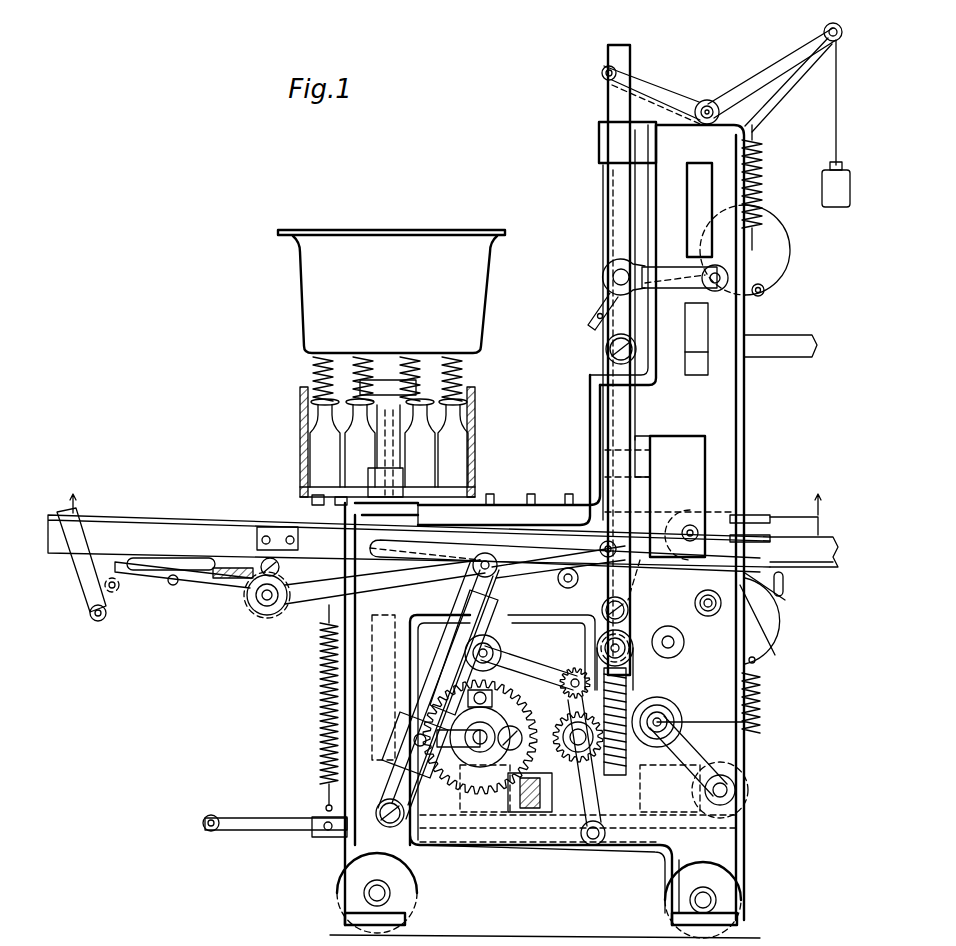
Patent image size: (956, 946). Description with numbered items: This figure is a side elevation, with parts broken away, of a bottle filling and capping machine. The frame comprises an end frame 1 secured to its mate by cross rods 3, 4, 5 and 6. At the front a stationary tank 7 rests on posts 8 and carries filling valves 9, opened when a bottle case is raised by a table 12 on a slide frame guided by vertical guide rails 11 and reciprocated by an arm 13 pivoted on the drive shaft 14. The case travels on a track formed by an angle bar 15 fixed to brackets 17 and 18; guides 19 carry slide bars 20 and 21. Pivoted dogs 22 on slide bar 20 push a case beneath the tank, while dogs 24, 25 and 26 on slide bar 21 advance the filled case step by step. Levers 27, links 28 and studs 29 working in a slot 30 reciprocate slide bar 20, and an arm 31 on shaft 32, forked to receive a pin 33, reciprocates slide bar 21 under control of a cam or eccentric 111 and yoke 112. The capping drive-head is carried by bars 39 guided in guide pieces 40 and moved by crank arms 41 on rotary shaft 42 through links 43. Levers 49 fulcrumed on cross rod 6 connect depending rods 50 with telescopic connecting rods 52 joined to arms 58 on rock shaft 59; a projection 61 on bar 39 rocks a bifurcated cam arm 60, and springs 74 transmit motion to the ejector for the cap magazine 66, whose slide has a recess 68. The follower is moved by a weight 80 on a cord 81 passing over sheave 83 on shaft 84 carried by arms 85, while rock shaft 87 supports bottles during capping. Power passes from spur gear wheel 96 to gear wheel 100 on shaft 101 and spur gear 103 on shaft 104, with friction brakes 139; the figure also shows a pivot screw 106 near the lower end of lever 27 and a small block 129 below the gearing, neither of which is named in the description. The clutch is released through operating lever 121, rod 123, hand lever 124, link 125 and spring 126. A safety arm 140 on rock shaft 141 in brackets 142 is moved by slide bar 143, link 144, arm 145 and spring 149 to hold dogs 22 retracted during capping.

The end frame 1 is at (738, 830).
The cross rod 3 is at (258, 607).
The cross rod 4 is at (734, 786).
The cross rod 5 is at (721, 609).
The cross rod 6 is at (709, 100).
The stationary tank 7 is at (391, 291).
The post 8 is at (399, 464).
The filling valve 9 is at (312, 412).
The vertical guide rail 11 is at (598, 645).
The table 12 is at (640, 600).
The arm 13 is at (428, 624).
The shaft 14 is at (500, 650).
The angle bar 15 is at (165, 516).
The bracket 17 is at (300, 500).
The bracket 18 is at (772, 642).
The guide 19 is at (312, 495).
The slide bar 20 is at (257, 540).
The slide bar 21 is at (790, 533).
The pivoted dog 22 is at (293, 526).
The yieldable dog 24 is at (497, 493).
The yieldable dog 25 is at (531, 494).
The yieldable dog 26 is at (590, 505).
The lever 27 is at (482, 604).
The link 28 is at (548, 572).
The stud 29 is at (576, 577).
The slot 30 is at (455, 556).
The arm 31 is at (684, 636).
The shaft 32 is at (684, 646).
The pin 33 is at (688, 527).
The vertically reciprocatory bar 39 is at (618, 200).
The guide piece 40 is at (615, 150).
The crank arm 41 is at (604, 612).
The rotary shaft 42 is at (600, 655).
The link 43 is at (622, 502).
The lever 49 is at (668, 93).
The depending rod 50 is at (603, 220).
The telescopic connecting rod 52 is at (762, 195).
The arm 58 is at (766, 292).
The rock shaft 59 is at (714, 306).
The cam arm 60 is at (663, 270).
The projection 61 is at (612, 277).
The cap magazine 66 is at (800, 340).
The recess 68 is at (605, 266).
The spring 74 is at (791, 258).
The weight 80 is at (836, 200).
The cord 81 is at (776, 119).
The guide sheave 83 is at (836, 21).
The shaft 84 is at (825, 33).
The arm 85 is at (772, 74).
The rock shaft 87 is at (500, 640).
The spur gear wheel 96 is at (534, 679).
The gear wheel 100 is at (522, 730).
The shaft 101 is at (566, 684).
The spur gear 103 is at (627, 702).
The shaft 104 is at (680, 717).
The screw 106 is at (404, 802).
The cam or eccentric 111 is at (581, 638).
The yoke 112 is at (647, 580).
The operating lever 121 is at (276, 818).
The rod 123 is at (210, 815).
The hand lever 124 is at (225, 580).
The link 125 is at (323, 718).
The spring 126 is at (323, 690).
The block 129 is at (530, 812).
The friction brake 139 is at (748, 723).
The arm 140 is at (82, 582).
The rock shaft 141 is at (95, 618).
The bracket 142 is at (118, 592).
The slide bar 143 is at (176, 586).
The link 144 is at (158, 573).
The arm 145 is at (762, 700).
The spring 149 is at (762, 703).